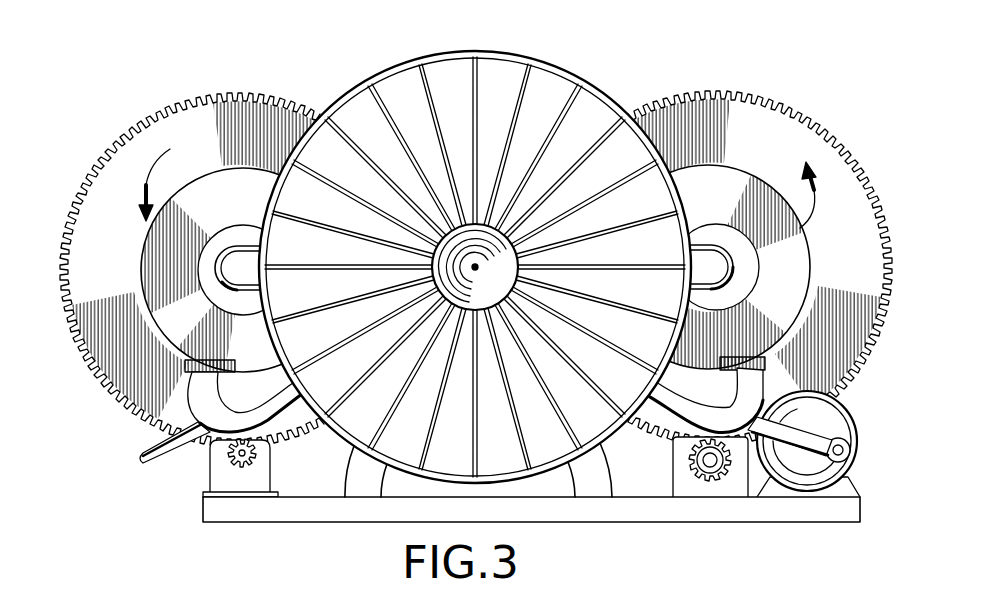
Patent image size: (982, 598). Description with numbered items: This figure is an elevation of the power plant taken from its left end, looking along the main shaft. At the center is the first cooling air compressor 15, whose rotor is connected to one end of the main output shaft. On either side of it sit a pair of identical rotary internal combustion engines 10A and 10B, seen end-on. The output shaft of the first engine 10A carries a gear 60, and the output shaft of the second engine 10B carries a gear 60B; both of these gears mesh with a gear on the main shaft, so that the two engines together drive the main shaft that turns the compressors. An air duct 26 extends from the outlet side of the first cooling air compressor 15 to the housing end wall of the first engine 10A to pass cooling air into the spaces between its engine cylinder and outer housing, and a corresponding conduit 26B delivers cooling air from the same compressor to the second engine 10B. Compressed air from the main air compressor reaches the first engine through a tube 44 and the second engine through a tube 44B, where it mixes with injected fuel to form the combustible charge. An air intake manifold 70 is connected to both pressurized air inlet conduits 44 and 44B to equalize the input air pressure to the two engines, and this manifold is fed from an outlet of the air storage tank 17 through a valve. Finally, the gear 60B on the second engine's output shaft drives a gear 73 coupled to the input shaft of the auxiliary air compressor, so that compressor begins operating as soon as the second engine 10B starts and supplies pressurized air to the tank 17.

The first cooling air compressor 15 is at (510, 52).
The gear 60 is at (253, 108).
The gear 60B is at (718, 100).
The rotary internal combustion engine 10A is at (242, 247).
The rotary internal combustion engine 10B is at (803, 168).
The air duct 26 is at (233, 246).
The conduit 26B is at (706, 250).
The tube 44 is at (193, 390).
The tube 44B is at (763, 380).
The air intake manifold 70 is at (820, 430).
The air storage tank 17 is at (858, 436).
The gear 73 is at (710, 482).